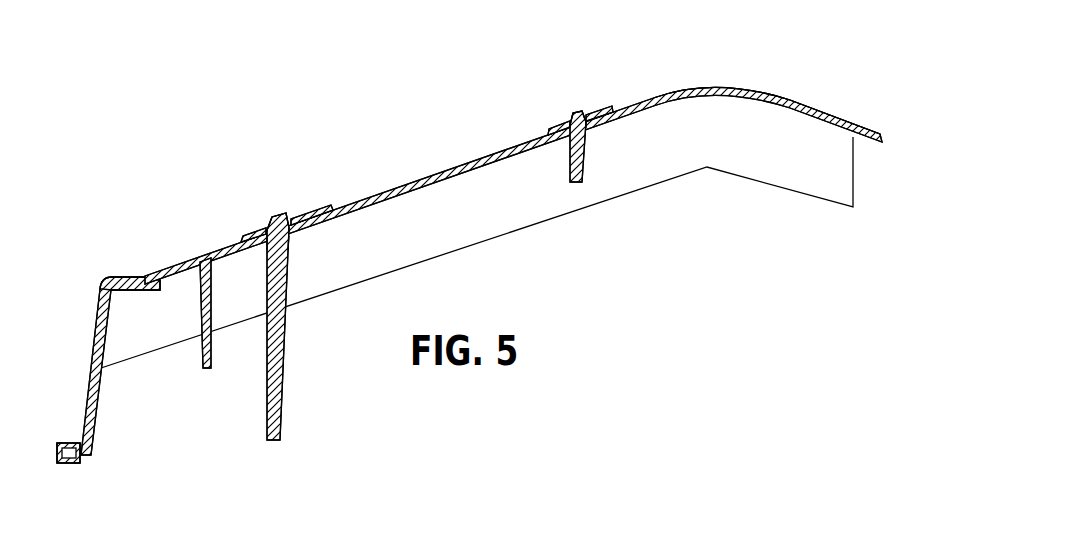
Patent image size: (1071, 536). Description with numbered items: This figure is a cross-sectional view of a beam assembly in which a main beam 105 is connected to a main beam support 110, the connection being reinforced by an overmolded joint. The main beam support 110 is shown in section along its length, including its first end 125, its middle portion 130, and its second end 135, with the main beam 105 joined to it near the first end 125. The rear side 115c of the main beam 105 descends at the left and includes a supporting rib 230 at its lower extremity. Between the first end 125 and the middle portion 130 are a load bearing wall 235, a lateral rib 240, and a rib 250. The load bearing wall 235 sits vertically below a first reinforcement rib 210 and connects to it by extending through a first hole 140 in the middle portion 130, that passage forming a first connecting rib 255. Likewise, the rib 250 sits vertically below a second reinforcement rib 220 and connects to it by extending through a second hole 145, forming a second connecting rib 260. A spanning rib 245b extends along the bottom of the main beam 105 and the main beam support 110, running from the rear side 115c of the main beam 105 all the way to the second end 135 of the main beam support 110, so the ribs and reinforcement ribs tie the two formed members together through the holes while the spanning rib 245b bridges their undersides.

The main beam 105 is at (85, 455).
The main beam support 110 is at (178, 260).
The rear side 115c is at (92, 365).
The first end 125 is at (146, 276).
The middle portion 130 is at (700, 88).
The second end 135 is at (806, 110).
The first hole 140 is at (296, 230).
The second hole 145 is at (567, 148).
The first reinforcement rib 210 is at (268, 222).
The second reinforcement rib 220 is at (575, 113).
The supporting rib 230 is at (69, 465).
The load bearing wall 235 is at (270, 442).
The lateral rib 240 is at (205, 340).
The spanning rib 245b is at (473, 213).
The rib 250 is at (584, 176).
The first connecting rib 255 is at (285, 240).
The second connecting rib 260 is at (588, 125).